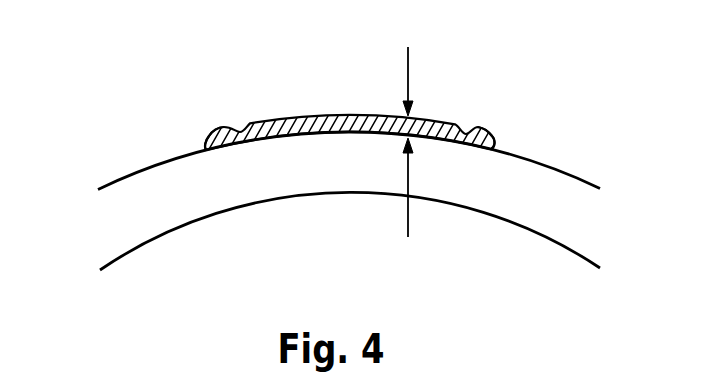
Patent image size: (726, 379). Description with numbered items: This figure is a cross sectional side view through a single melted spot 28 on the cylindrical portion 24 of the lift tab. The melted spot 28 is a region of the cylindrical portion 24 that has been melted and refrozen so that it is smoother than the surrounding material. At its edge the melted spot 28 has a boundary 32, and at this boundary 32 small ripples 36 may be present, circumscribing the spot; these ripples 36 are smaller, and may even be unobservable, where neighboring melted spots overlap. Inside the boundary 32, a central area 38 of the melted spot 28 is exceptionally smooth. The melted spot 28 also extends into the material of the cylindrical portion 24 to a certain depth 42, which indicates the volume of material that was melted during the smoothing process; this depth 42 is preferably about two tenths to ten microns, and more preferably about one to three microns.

The cylindrical portion 24 is at (128, 193).
The melted spot 28 is at (350, 88).
The boundary 32 is at (204, 122).
The ripples 36 is at (205, 134).
The central area 38 is at (487, 120).
The depth 42 is at (407, 214).